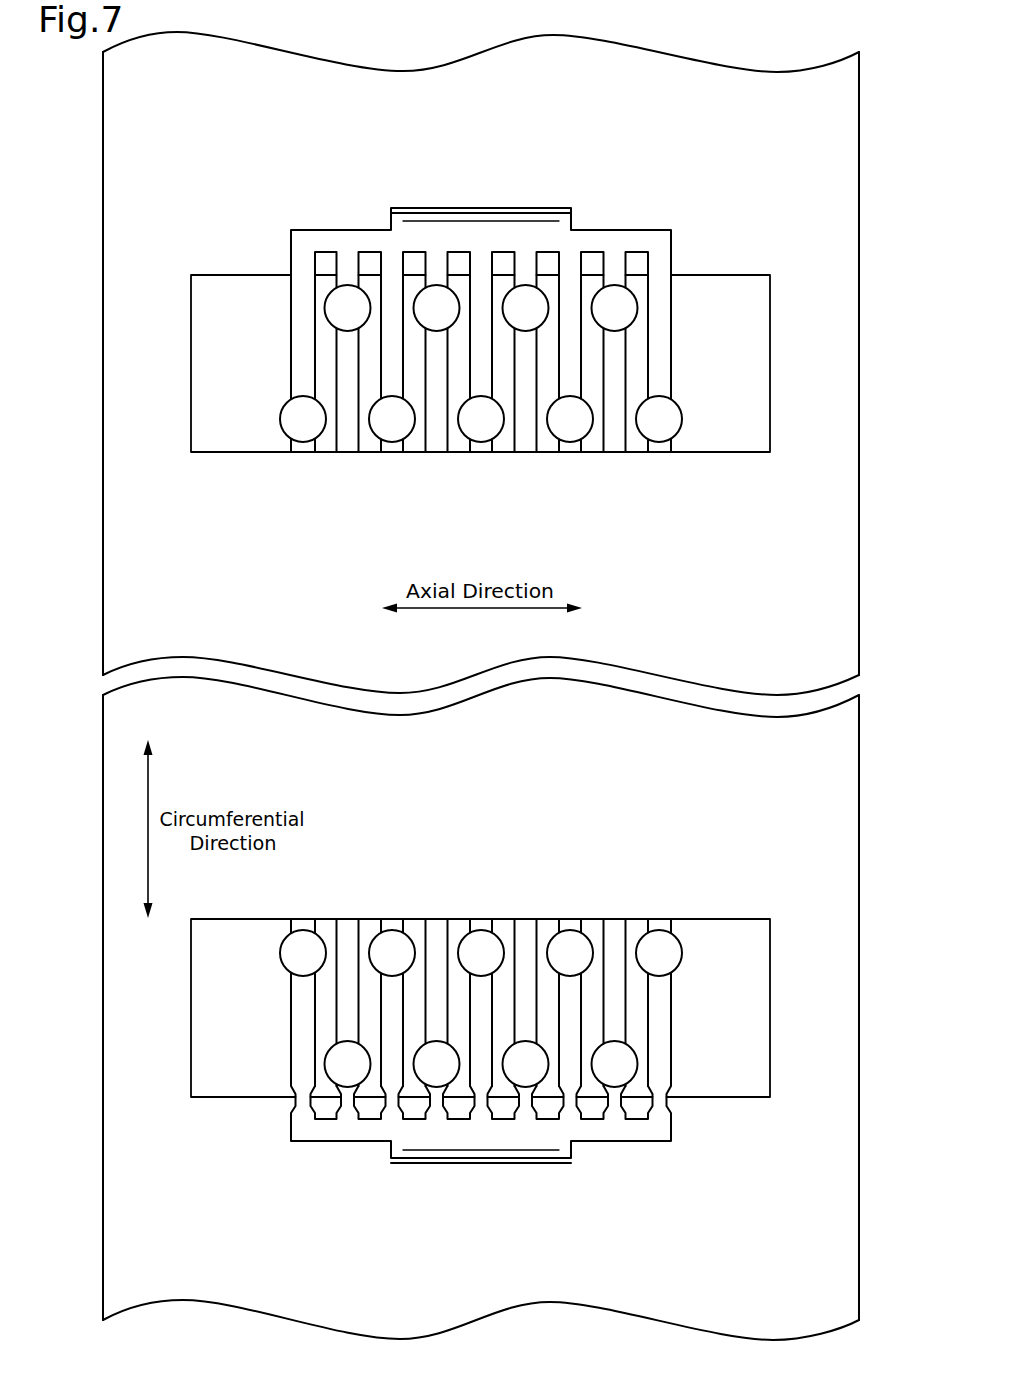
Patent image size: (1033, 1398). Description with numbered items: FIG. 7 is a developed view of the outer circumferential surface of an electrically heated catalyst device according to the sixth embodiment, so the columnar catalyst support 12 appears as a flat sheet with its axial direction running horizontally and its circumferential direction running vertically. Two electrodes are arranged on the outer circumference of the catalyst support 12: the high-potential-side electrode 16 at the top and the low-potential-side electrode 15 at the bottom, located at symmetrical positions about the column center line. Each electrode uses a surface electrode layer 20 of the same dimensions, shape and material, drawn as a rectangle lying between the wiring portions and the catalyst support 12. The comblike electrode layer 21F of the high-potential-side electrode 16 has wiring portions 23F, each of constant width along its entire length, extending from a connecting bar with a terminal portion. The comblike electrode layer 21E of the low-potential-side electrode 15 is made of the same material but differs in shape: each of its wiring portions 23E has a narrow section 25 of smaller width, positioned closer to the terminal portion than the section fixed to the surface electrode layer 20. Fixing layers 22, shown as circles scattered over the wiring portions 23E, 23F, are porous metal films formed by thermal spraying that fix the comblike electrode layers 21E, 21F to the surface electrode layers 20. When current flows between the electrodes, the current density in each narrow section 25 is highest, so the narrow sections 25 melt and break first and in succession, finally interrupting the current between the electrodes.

The catalyst support 12 is at (862, 718).
The low-potential-side electrode 15 is at (499, 1031).
The high-potential-side electrode 16 is at (500, 298).
The surface electrode layer 20 is at (762, 363).
The comblike electrode layer 21E is at (290, 1127).
The comblike electrode layer 21F is at (290, 247).
The fixing layer 22 is at (614, 297).
The wiring portion 23E is at (348, 1007).
The wiring portion 23F is at (348, 375).
The narrow section 25 is at (347, 1101).